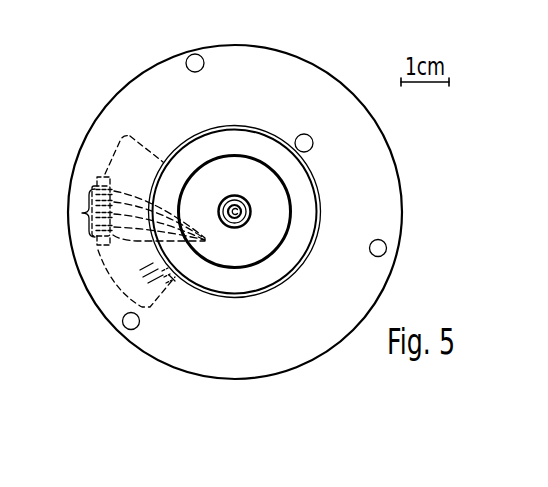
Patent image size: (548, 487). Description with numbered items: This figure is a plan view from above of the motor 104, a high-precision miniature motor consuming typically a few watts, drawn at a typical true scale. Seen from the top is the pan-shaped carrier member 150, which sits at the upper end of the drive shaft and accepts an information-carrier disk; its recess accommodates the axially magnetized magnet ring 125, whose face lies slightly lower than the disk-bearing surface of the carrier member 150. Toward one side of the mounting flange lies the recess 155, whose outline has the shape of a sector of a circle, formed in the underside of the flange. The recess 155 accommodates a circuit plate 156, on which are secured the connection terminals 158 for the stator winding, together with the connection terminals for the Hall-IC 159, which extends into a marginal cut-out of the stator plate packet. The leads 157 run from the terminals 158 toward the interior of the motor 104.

The motor 104 is at (177, 51).
The magnet ring 125 is at (297, 174).
The carrier member 150 is at (267, 292).
The recess 155 is at (115, 156).
The circuit plate 156 is at (152, 151).
The connecting wires 157 is at (173, 224).
The connection terminals 158 is at (80, 213).
The Hall-IC 159 is at (172, 282).